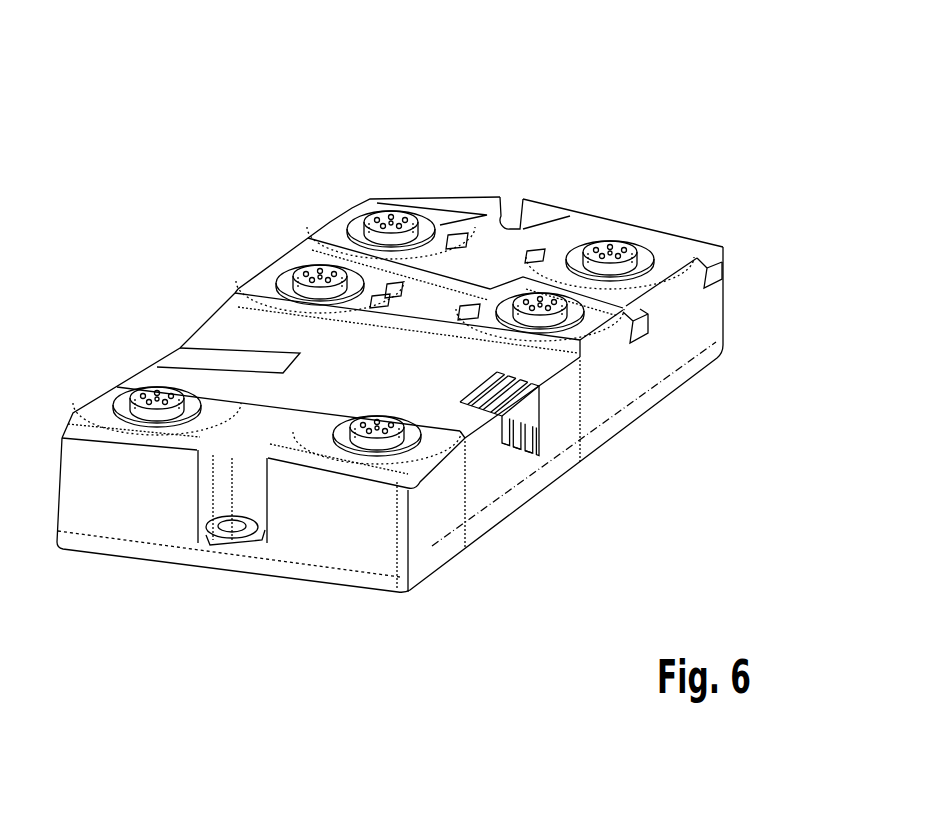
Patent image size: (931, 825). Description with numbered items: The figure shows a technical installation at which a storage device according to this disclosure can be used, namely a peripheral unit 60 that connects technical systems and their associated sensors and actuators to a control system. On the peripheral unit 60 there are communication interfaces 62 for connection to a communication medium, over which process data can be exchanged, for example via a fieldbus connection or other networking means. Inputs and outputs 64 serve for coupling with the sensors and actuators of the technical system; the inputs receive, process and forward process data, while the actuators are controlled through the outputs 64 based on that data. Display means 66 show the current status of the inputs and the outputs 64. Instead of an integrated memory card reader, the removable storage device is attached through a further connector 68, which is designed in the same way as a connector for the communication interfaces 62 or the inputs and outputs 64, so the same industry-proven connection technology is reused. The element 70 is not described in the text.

The peripheral unit 60 is at (531, 131).
The communication interfaces 62 is at (151, 392).
The inputs and outputs 64 is at (653, 262).
The display means 66 is at (537, 417).
The further connector 68 is at (377, 190).
The socket housing 70 is at (380, 215).